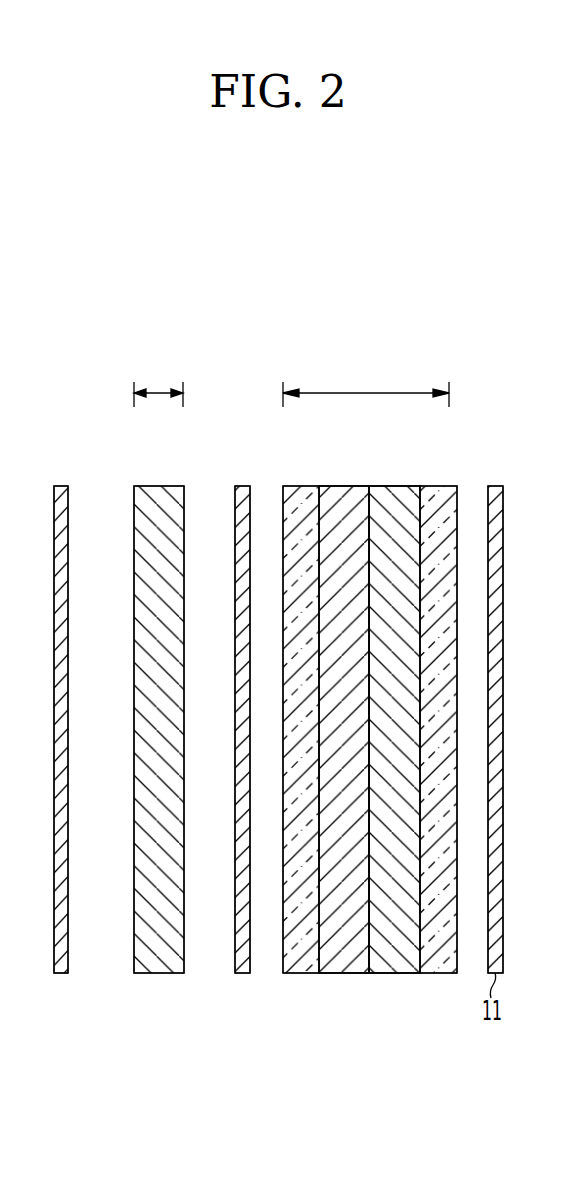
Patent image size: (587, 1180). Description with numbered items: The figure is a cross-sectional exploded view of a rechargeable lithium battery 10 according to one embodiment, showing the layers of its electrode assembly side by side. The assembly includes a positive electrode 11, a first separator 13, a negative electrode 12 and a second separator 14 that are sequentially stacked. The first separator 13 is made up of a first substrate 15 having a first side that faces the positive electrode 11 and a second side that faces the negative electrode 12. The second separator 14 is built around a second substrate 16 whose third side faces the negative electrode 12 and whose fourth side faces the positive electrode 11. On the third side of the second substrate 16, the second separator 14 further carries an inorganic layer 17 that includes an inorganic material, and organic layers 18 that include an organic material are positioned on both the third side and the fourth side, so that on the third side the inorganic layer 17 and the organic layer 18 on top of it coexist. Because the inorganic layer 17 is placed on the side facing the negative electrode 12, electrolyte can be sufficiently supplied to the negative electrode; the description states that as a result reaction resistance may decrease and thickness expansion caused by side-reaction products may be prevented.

The rechargeable lithium battery 10 is at (69, 306).
The positive electrode 11 is at (60, 973).
The negative electrode 12 is at (241, 973).
The first separator 13 is at (158, 381).
The second separator 14 is at (366, 381).
The first substrate 15 is at (151, 973).
The second substrate 16 is at (394, 973).
The inorganic layer 17 is at (343, 973).
The organic layers 18 is at (370, 720).